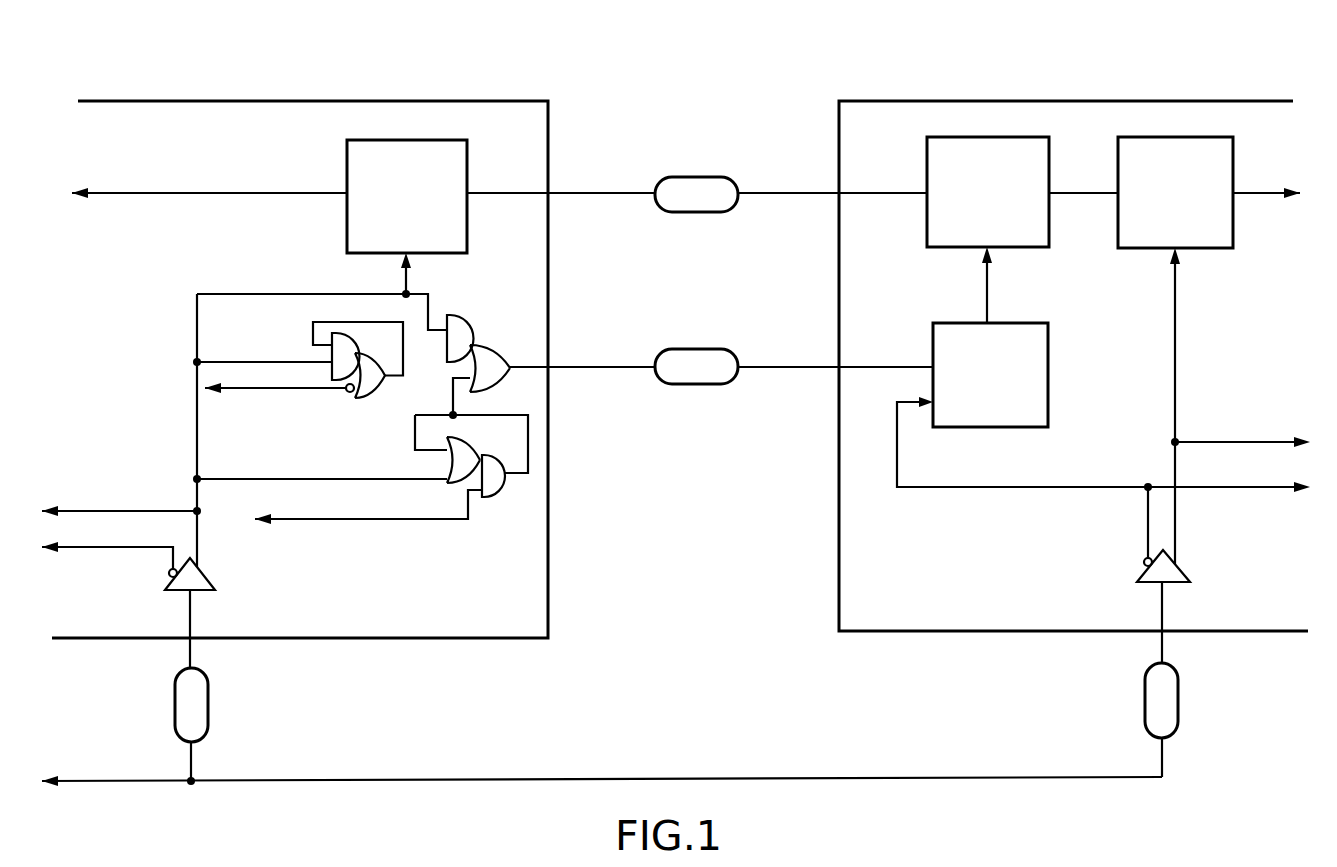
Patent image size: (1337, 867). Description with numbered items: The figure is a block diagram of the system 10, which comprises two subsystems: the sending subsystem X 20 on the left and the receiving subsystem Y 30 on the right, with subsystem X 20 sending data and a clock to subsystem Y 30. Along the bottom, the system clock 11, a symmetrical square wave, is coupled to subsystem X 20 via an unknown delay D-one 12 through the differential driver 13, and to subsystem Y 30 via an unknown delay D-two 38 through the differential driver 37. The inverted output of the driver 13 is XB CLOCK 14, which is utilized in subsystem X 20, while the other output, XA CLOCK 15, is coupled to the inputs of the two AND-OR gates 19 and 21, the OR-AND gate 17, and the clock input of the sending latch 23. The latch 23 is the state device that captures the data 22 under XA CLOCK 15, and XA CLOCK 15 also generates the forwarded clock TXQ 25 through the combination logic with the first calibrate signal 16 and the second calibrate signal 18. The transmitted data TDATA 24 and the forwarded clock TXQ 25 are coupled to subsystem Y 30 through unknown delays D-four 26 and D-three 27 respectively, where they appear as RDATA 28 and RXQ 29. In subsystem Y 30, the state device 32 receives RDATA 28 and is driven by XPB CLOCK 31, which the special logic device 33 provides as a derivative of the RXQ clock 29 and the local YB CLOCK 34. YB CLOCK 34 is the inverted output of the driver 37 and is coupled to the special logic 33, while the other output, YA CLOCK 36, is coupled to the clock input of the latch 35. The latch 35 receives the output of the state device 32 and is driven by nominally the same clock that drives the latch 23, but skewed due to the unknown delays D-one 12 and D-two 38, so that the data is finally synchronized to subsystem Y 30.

The system 10 is at (637, 106).
The system clock 11 is at (165, 783).
The delay D1 12 is at (208, 712).
The differential driver 13 is at (212, 582).
The XB CLOCK 14 is at (88, 552).
The XA CLOCK 15 is at (186, 506).
The CALIBRATE 1 signal 16 is at (345, 522).
The OR-AND gate 17 is at (497, 500).
The CALIBRATE 2 signal 18 is at (277, 386).
The AND-OR gate 19 is at (383, 393).
The subsystem X 20 is at (362, 101).
The AND-OR gate 21 is at (481, 342).
The data 22 is at (227, 193).
The latch 23 is at (347, 216).
The transmitted data TDATA 24 is at (609, 197).
The forwarded clock TXQ 25 is at (600, 371).
The delay D4 26 is at (700, 177).
The delay D3 27 is at (695, 349).
The RDATA 28 is at (805, 197).
The RXQ clock 29 is at (792, 371).
The subsystem Y 30 is at (910, 82).
The XPB CLOCK 31 is at (990, 281).
The state device 32 is at (927, 168).
The special logic device 33 is at (1048, 381).
The YB CLOCK 34 is at (970, 489).
The latch 35 is at (1233, 228).
The YA CLOCK 36 is at (1225, 445).
The differential driver 37 is at (1190, 572).
The delay D2 38 is at (1145, 702).